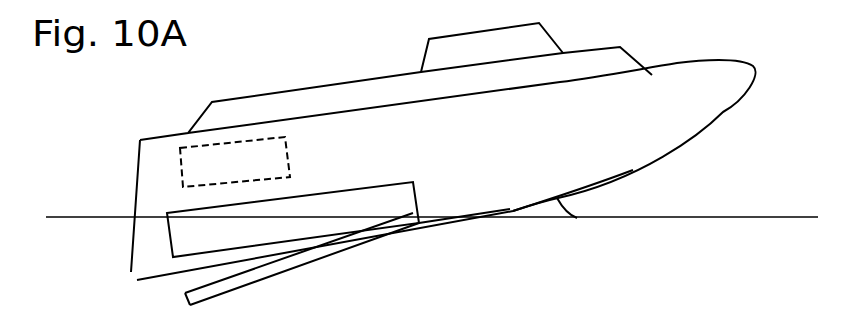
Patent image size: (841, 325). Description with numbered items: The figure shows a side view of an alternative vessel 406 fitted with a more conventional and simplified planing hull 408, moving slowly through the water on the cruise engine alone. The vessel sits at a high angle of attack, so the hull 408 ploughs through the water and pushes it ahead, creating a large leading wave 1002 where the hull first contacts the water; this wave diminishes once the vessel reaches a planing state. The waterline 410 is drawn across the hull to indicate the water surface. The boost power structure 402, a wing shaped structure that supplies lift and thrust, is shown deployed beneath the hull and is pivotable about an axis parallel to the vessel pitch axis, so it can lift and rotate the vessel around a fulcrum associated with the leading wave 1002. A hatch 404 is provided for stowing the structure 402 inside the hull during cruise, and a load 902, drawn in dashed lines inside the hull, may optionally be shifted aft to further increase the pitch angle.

The boost power structure 402 is at (300, 262).
The hatch 404 is at (415, 183).
The vessel 406 is at (598, 145).
The planing hull 408 is at (633, 170).
The waterline 410 is at (743, 217).
The load 902 is at (285, 157).
The leading wave 1002 is at (553, 207).